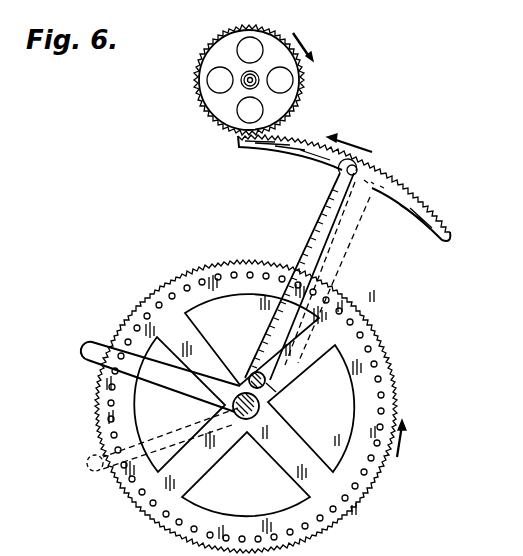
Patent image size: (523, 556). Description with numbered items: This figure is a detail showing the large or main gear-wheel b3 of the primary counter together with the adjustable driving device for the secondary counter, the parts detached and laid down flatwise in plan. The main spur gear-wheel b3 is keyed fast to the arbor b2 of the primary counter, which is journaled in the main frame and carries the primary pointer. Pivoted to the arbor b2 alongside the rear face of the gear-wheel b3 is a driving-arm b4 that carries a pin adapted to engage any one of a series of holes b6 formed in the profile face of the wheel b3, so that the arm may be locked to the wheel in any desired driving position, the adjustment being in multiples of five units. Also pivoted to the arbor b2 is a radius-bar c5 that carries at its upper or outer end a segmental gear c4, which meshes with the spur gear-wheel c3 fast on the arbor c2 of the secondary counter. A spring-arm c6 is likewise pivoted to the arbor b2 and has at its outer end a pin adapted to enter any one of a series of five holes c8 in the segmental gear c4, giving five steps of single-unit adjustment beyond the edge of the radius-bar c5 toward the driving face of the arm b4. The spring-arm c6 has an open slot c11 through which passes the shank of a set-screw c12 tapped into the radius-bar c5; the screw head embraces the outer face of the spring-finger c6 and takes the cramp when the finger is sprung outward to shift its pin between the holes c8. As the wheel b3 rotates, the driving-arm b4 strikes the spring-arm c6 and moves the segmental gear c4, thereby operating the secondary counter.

The arbor c2 is at (253, 84).
The spur gear-wheel c3 is at (198, 88).
The segmental gear c4 is at (316, 152).
The radius-bar c5 is at (330, 198).
The spring-arm c6 is at (341, 253).
The holes c8 is at (372, 186).
The open slot c11 is at (254, 374).
The set-screw c12 is at (268, 388).
The arbor b2 is at (259, 407).
The main spur gear-wheel b3 is at (158, 298).
The driving-arm b4 is at (98, 363).
The holes b6 is at (370, 358).